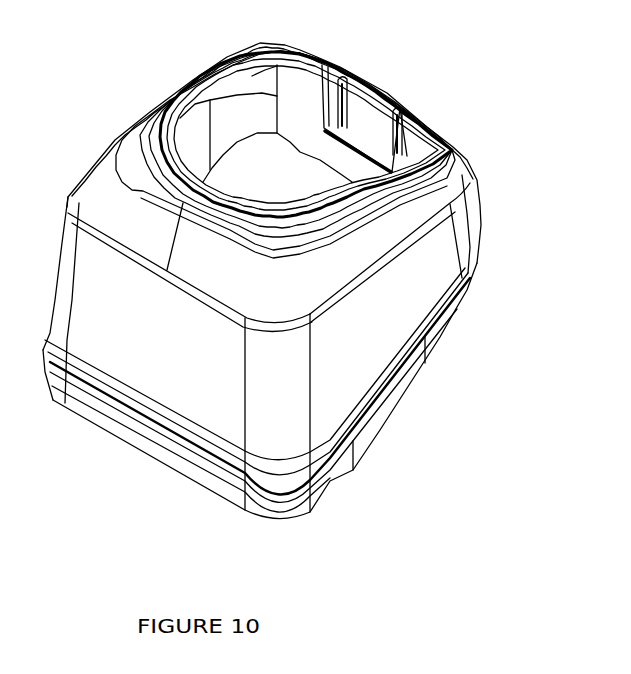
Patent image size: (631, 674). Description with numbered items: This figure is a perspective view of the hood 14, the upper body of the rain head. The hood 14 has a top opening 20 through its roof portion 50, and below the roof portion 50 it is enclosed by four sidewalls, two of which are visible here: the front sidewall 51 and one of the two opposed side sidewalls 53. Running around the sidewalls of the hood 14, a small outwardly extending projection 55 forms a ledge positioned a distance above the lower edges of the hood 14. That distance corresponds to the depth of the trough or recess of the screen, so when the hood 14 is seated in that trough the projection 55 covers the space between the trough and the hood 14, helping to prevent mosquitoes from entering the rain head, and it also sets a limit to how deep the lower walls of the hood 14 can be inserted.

The hood 14 is at (152, 55).
The top opening 20 is at (281, 151).
The roof portion 50 is at (112, 182).
The front sidewall 51 is at (143, 350).
The side sidewall 53 is at (413, 285).
The projection 55 is at (285, 493).